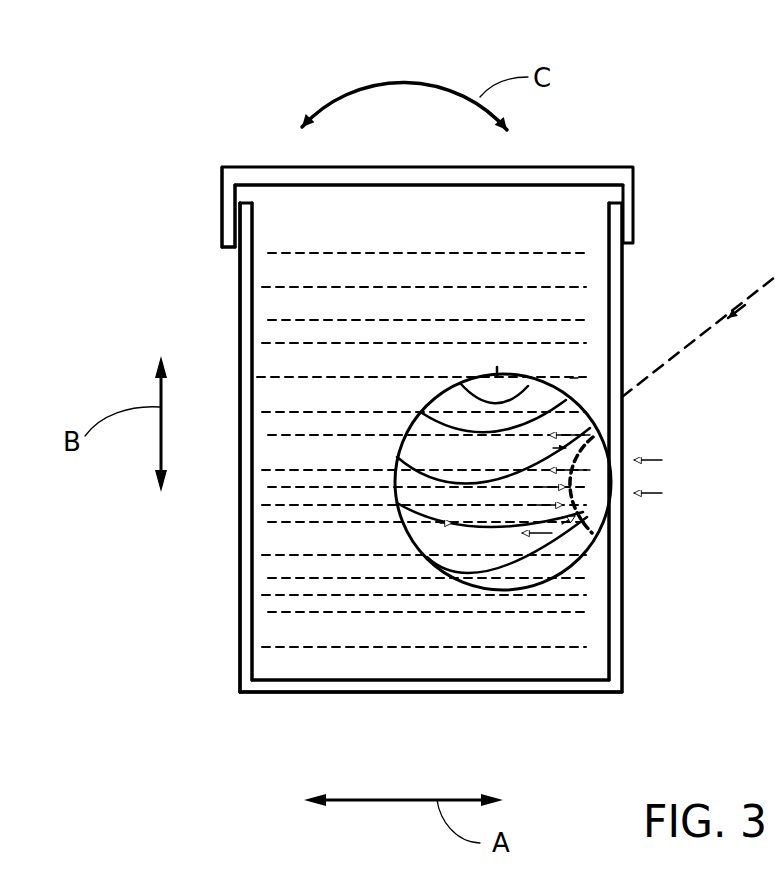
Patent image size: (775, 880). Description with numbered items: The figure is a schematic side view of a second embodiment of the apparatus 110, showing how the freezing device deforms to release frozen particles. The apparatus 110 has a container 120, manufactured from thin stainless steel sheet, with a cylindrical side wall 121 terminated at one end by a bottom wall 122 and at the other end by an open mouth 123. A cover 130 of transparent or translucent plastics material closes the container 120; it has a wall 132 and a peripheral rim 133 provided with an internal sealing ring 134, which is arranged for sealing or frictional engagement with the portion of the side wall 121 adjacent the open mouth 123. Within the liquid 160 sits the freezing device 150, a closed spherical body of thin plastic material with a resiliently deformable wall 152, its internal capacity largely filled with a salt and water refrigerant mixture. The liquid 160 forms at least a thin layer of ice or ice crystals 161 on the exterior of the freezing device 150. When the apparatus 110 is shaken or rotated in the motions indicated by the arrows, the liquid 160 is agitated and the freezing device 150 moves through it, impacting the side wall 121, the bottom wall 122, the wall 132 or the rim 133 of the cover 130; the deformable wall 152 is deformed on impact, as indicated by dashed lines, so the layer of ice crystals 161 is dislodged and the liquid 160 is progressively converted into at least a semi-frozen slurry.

The apparatus 110 is at (203, 278).
The container 120 is at (203, 563).
The side wall 121 is at (238, 345).
The bottom wall 122 is at (430, 692).
The open mouth 123 is at (587, 213).
The cover 130 is at (253, 135).
The wall 132 is at (440, 183).
The peripheral rim 133 is at (222, 209).
The internal sealing ring 134 is at (237, 200).
The freezing device 150 is at (582, 540).
The resiliently deformable wall 152 is at (600, 474).
The liquid 160 is at (310, 652).
The ice crystals 161 is at (598, 503).